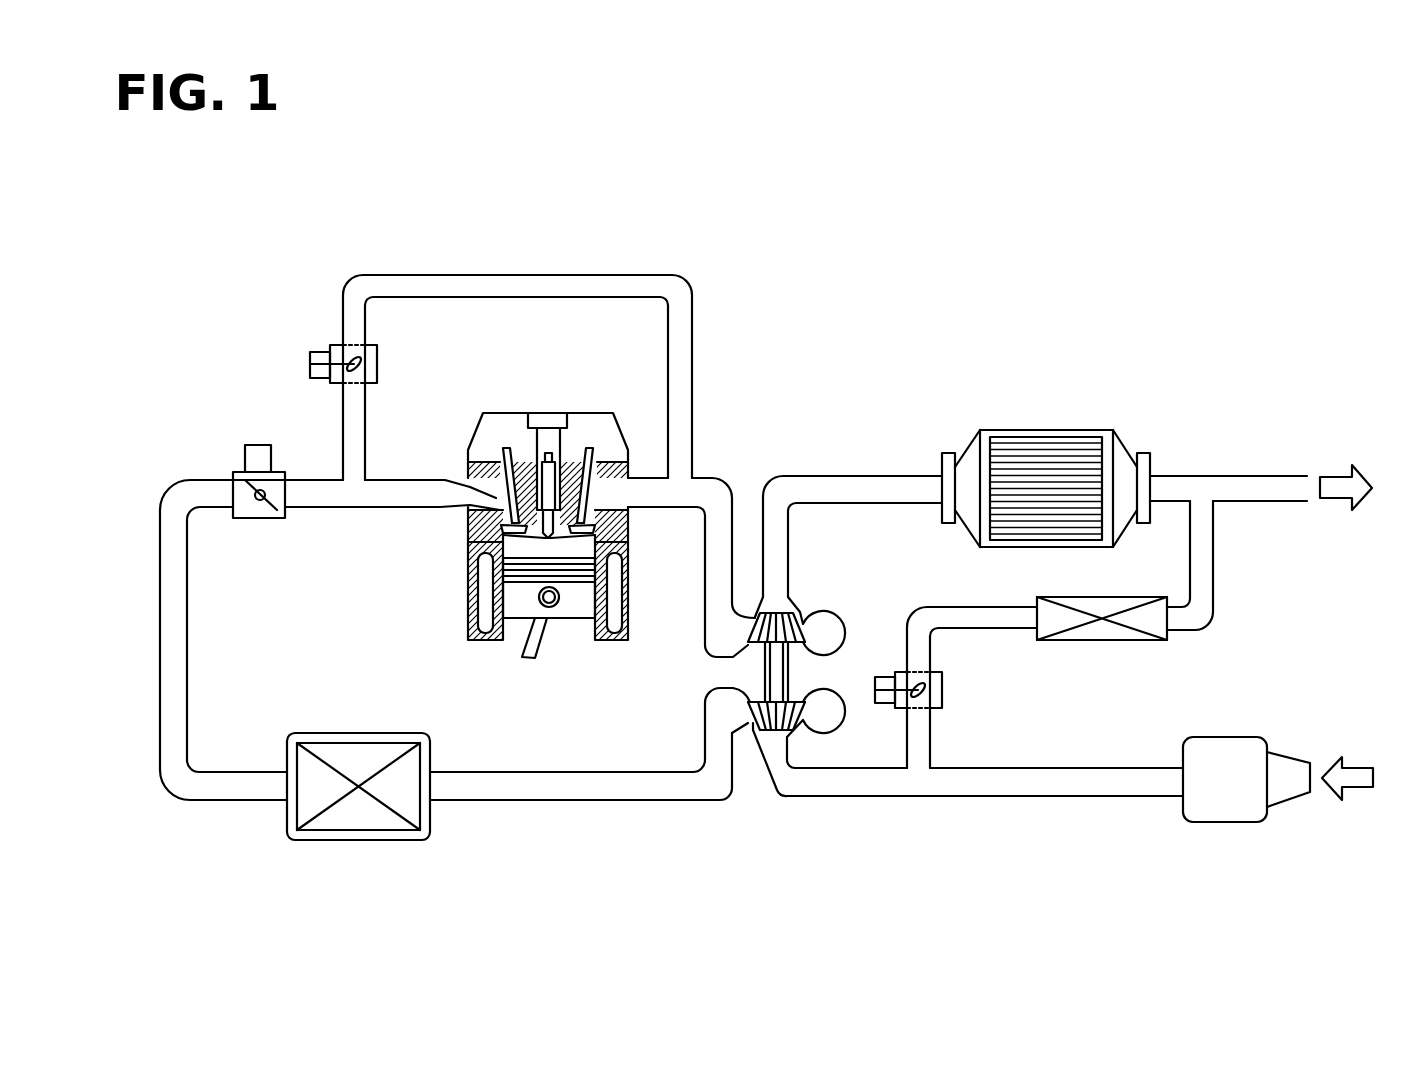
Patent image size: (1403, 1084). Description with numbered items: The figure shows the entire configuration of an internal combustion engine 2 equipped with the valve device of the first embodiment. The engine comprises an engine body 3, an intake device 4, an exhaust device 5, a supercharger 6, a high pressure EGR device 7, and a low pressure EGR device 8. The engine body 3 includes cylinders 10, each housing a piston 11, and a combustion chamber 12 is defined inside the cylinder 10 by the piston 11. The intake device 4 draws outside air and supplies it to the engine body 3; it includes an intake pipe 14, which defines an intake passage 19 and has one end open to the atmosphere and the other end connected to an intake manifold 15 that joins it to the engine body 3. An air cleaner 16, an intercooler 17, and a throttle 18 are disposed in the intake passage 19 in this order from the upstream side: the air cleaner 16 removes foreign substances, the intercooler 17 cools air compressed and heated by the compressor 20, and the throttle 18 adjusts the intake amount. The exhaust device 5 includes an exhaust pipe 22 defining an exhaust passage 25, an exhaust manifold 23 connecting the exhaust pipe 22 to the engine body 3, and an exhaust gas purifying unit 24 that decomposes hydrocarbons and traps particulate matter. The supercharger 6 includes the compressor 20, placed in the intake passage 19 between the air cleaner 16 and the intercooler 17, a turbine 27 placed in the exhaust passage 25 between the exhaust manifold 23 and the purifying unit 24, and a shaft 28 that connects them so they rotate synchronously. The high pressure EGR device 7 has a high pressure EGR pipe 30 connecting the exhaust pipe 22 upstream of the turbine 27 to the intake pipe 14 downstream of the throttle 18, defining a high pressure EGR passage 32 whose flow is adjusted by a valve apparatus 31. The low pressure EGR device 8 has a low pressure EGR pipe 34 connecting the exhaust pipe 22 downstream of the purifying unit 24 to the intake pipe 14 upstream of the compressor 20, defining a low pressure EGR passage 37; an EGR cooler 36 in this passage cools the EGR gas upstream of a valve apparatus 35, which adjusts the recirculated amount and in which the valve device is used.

The internal combustion engine 2 is at (235, 837).
The engine body 3 is at (533, 549).
The intake device 4 is at (660, 808).
The exhaust device 5 is at (714, 470).
The supercharger 6 is at (747, 594).
The high pressure EGR device 7 is at (483, 339).
The low pressure EGR device 8 is at (924, 606).
The cylinder 10 is at (470, 630).
The piston 11 is at (575, 602).
The combustion chamber 12 is at (578, 548).
The intake pipe 14 is at (775, 796).
The intake manifold 15 is at (355, 507).
The air cleaner 16 is at (1222, 812).
The intercooler 17 is at (357, 822).
The throttle 18 is at (260, 512).
The intake passage 19 is at (1048, 782).
The compressor 20 is at (757, 712).
The exhaust pipe 22 is at (765, 477).
The exhaust manifold 23 is at (647, 478).
The exhaust gas purifying unit 24 is at (1053, 452).
The exhaust passage 25 is at (868, 485).
The turbine 27 is at (762, 628).
The shaft 28 is at (774, 671).
The high pressure EGR pipe 30 is at (487, 272).
The valve apparatus 31 is at (336, 345).
The high pressure EGR passage 32 is at (405, 272).
The low pressure EGR pipe 34 is at (1012, 635).
The valve apparatus 35 is at (942, 692).
The EGR cooler 36 is at (1098, 635).
The low pressure EGR passage 37 is at (972, 617).